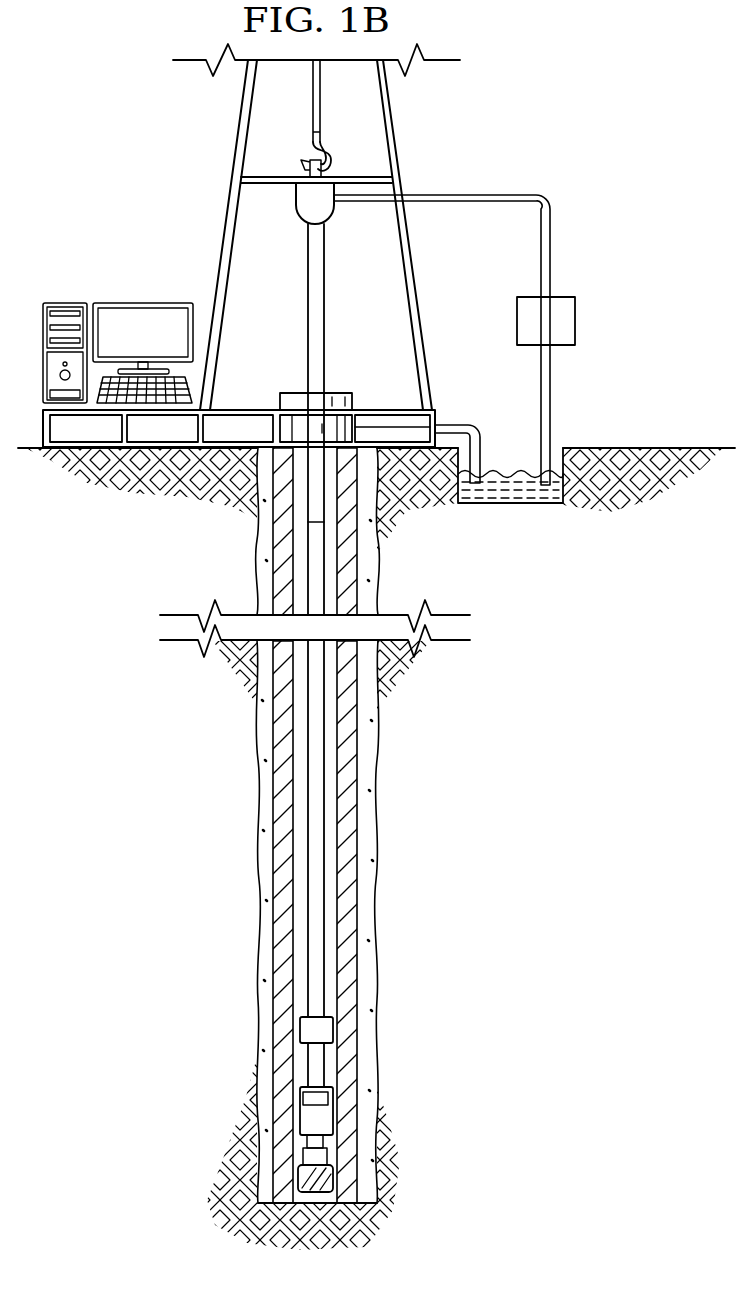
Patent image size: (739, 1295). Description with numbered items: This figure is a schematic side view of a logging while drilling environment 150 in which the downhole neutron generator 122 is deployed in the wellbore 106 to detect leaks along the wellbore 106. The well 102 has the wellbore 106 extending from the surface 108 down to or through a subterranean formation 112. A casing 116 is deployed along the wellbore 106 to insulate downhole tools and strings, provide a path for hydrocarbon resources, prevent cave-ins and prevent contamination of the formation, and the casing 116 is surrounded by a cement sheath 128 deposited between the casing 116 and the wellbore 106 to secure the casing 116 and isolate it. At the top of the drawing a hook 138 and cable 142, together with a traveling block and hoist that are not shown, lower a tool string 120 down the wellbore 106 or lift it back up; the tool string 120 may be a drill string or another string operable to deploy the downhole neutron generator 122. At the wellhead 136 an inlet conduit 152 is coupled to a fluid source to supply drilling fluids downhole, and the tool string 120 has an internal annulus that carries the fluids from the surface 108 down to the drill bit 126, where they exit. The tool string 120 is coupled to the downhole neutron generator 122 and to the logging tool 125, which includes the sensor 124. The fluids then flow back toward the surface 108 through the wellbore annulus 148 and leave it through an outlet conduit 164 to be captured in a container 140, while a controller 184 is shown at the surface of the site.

The well 102 is at (340, 390).
The wellbore 106 is at (378, 800).
The surface 108 is at (660, 448).
The subterranean formation 112 is at (588, 738).
The casing 116 is at (350, 877).
The tool string 120 is at (308, 805).
The downhole neutron generator 122 is at (300, 1032).
The sensor 124 is at (310, 1098).
The logging tool 125 is at (325, 1117).
The drill bit 126 is at (332, 1173).
The cement sheath 128 is at (367, 757).
The wellhead 136 is at (292, 393).
The hook 138 is at (333, 162).
The container 140 is at (505, 503).
The cable 142 is at (312, 122).
The wellbore annulus 148 is at (300, 920).
The logging while drilling environment 150 is at (163, 215).
The inlet conduit 152 is at (520, 195).
The outlet conduit 164 is at (448, 425).
The controller 184 is at (63, 303).